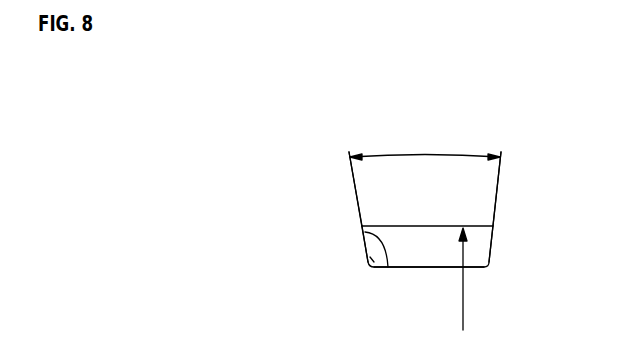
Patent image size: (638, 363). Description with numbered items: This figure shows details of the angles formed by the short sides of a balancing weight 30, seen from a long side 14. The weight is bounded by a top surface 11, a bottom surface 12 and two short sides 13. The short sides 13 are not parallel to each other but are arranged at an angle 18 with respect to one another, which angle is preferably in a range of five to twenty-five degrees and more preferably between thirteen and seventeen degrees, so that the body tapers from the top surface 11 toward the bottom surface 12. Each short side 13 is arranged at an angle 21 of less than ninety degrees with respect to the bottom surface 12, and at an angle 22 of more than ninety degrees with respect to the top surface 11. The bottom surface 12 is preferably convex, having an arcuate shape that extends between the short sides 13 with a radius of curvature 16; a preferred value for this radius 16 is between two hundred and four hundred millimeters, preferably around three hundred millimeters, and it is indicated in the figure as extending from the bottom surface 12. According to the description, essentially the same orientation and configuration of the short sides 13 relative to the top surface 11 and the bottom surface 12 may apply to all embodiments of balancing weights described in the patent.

The balancing weight 30 is at (474, 128).
The angle 18 is at (427, 155).
The bottom surface 12 is at (427, 223).
The angle 21 is at (362, 243).
The angle 22 is at (366, 270).
The long side 14 is at (400, 270).
The top surface 11 is at (435, 270).
The short sides 13 is at (362, 244).
The radius of curvature 16 is at (465, 306).